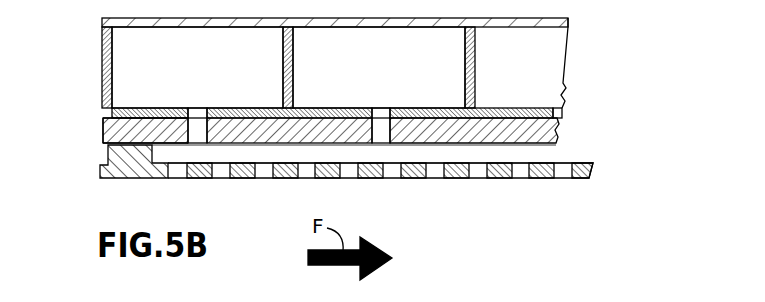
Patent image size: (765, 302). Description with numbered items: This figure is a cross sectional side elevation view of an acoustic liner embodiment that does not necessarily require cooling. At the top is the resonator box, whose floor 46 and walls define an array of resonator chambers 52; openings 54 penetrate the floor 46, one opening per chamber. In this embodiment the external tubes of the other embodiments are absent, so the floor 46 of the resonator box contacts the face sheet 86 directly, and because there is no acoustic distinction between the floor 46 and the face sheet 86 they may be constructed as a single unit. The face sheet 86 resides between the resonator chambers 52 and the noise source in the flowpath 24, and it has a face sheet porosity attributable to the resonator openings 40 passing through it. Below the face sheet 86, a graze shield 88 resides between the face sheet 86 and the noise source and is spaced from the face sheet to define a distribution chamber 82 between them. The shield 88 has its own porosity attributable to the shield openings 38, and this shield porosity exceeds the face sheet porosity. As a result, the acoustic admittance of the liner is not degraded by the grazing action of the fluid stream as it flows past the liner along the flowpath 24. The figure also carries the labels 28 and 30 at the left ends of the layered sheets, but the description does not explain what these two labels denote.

The flowpath 24 is at (297, 223).
The first end of lower member 28 is at (100, 168).
The first end of upper member 30 is at (102, 132).
The shield openings 38 is at (477, 178).
The resonator openings 40 is at (202, 134).
The floor 46 is at (495, 107).
The resonator chambers 52 is at (207, 75).
The openings 54 is at (383, 107).
The distribution chamber 82 is at (403, 153).
The face sheet 86 is at (562, 135).
The graze shield 88 is at (595, 172).